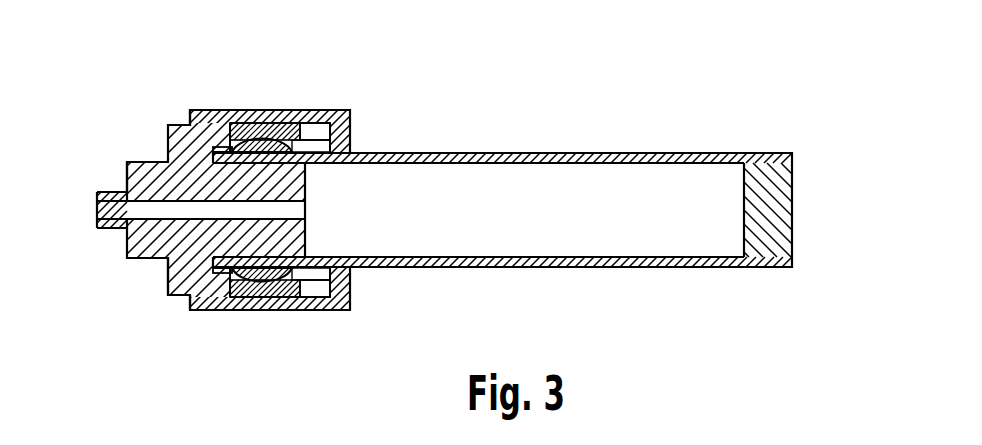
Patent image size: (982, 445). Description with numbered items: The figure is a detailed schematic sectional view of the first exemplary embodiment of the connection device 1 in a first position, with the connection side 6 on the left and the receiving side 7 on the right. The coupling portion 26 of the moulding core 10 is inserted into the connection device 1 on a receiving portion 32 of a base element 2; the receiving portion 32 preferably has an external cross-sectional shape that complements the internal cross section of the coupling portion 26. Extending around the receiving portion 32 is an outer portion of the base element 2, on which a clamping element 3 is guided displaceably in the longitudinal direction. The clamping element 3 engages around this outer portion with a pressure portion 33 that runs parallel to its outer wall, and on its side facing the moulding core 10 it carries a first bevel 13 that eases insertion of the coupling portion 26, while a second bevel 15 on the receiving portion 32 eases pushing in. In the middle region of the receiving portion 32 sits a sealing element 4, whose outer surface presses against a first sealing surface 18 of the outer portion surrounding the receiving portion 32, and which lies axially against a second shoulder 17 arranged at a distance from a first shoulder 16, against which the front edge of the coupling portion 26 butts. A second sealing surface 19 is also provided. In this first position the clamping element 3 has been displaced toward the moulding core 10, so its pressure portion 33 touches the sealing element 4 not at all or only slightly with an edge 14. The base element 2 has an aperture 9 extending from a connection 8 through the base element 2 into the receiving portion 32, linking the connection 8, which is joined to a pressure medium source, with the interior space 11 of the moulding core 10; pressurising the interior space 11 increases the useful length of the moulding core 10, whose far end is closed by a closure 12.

The connection device 1 is at (444, 185).
The base element 2 is at (147, 176).
The clamping element 3 is at (305, 112).
The sealing element 4 is at (273, 292).
The connection side 6 is at (124, 178).
The receiving side 7 is at (378, 123).
The connection 8 is at (112, 226).
The aperture 9 is at (112, 212).
The moulding core 10 is at (541, 156).
The interior space 11 is at (650, 192).
The closure 12 is at (768, 217).
The first bevel 13 is at (345, 268).
The edge 14 is at (296, 297).
The second bevel 15 is at (338, 311).
The first shoulder 16 is at (307, 208).
The second shoulder 17 is at (218, 110).
The first sealing surface 18 is at (308, 160).
The second sealing surface 19 is at (263, 112).
The coupling portion 26 is at (247, 112).
The receiving portion 32 is at (244, 240).
The pressure portion 33 is at (323, 112).